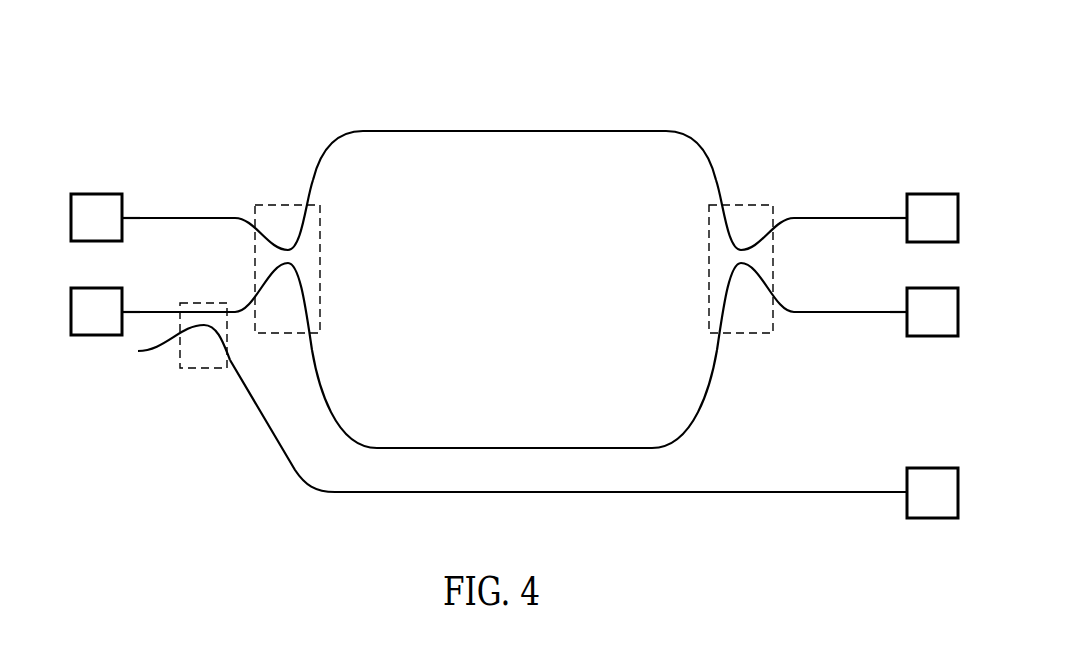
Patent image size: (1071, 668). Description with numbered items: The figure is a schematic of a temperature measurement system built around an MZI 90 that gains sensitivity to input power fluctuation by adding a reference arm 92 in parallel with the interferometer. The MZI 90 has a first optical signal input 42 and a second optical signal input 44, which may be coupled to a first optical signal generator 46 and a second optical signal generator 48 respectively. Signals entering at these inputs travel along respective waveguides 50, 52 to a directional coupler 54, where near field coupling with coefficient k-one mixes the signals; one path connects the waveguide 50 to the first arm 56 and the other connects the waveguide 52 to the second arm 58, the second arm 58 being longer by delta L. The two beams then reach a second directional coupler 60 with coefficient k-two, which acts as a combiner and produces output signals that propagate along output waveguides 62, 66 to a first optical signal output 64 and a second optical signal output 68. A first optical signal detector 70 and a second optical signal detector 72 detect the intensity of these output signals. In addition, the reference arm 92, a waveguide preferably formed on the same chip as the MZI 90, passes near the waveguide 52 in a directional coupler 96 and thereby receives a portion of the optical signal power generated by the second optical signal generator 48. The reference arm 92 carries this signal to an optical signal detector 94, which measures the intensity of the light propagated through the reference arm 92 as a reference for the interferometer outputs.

The first optical signal input 42 is at (128, 216).
The second optical signal input 44 is at (128, 310).
The first optical signal generator 46 is at (95, 193).
The second optical signal generator 48 is at (95, 287).
The waveguide 50 is at (170, 217).
The waveguide 52 is at (157, 310).
The directional coupler 54 is at (293, 203).
The first arm 56 is at (518, 130).
The second arm 58 is at (525, 447).
The second directional coupler 60 is at (738, 203).
The output waveguide 62 is at (860, 217).
The first optical signal output 64 is at (905, 216).
The output waveguide 66 is at (860, 311).
The second optical signal output 68 is at (905, 310).
The first optical signal detector 70 is at (933, 193).
The second optical signal detector 72 is at (933, 287).
The MZI 90 is at (347, 84).
The reference arm 92 is at (858, 491).
The optical signal detector 94 is at (930, 467).
The directional coupler 96 is at (203, 370).